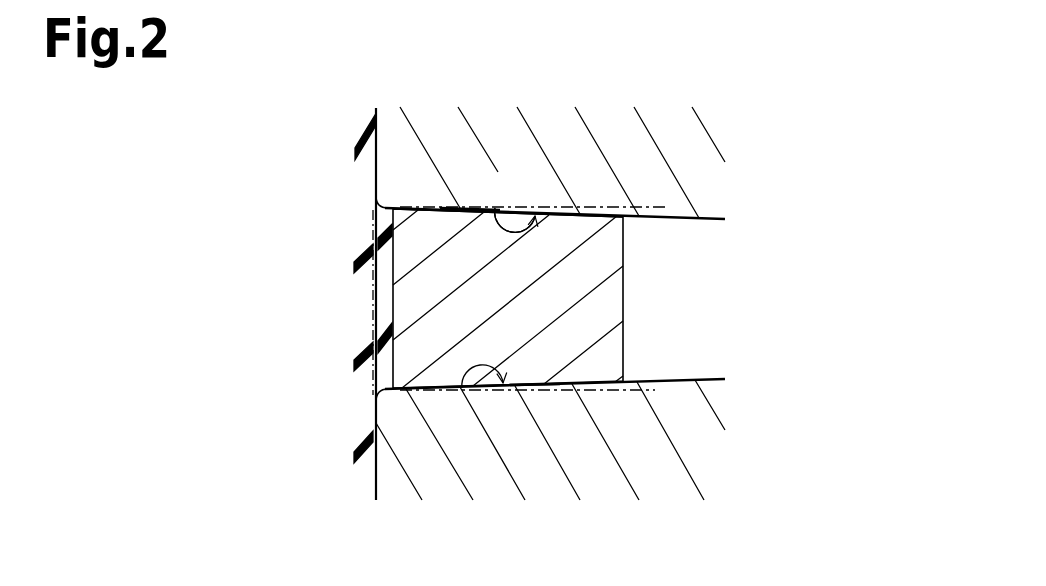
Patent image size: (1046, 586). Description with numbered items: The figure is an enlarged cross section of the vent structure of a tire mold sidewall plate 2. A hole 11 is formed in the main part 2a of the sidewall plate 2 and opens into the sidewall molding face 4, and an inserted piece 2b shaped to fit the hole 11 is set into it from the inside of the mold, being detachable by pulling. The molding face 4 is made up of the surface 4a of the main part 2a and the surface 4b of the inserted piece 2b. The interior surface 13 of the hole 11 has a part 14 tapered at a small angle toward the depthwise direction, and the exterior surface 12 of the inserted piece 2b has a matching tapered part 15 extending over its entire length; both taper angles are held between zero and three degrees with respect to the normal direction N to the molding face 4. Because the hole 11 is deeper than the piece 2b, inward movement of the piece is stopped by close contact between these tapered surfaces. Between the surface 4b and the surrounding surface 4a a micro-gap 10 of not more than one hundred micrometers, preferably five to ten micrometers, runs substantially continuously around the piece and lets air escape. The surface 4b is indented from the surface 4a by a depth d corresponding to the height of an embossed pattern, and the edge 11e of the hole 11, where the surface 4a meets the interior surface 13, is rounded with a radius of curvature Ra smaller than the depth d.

The sidewall plate 2 is at (595, 297).
The main part of the sidewall plate 2a is at (680, 207).
The inserted piece 2b is at (608, 300).
The sidewall molding face 4 is at (286, 291).
The surface of the main part 4a is at (375, 120).
The surface of the inserted piece 4b is at (387, 306).
The micro-gap 10 is at (462, 390).
The hole 11 is at (681, 340).
The edge of the hole 11e is at (371, 398).
The exterior surface of the inserted piece 12 is at (532, 390).
The interior surface of the hole 13 is at (497, 208).
The tapered part of the interior surface 14 is at (515, 220).
The tapered part of the exterior surface 15 is at (470, 206).
The normal direction N is at (645, 208).
The radius of curvature Ra is at (381, 204).
The depth d is at (393, 270).